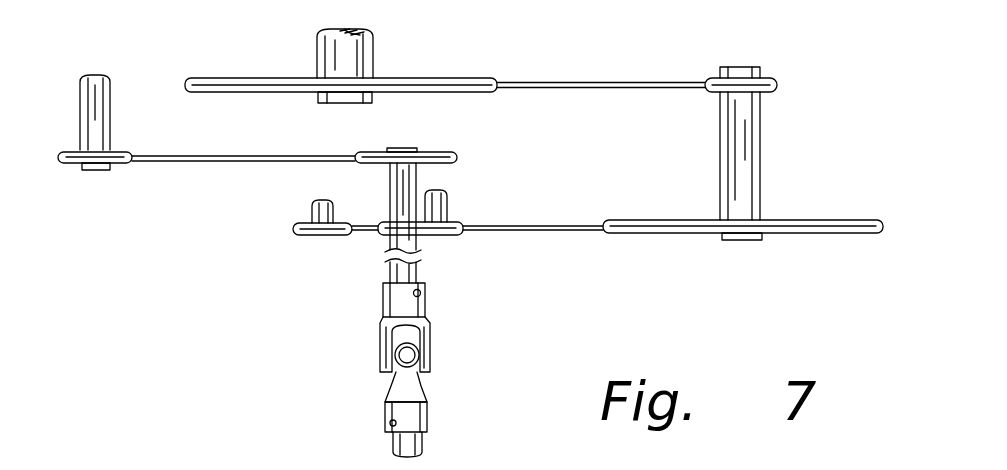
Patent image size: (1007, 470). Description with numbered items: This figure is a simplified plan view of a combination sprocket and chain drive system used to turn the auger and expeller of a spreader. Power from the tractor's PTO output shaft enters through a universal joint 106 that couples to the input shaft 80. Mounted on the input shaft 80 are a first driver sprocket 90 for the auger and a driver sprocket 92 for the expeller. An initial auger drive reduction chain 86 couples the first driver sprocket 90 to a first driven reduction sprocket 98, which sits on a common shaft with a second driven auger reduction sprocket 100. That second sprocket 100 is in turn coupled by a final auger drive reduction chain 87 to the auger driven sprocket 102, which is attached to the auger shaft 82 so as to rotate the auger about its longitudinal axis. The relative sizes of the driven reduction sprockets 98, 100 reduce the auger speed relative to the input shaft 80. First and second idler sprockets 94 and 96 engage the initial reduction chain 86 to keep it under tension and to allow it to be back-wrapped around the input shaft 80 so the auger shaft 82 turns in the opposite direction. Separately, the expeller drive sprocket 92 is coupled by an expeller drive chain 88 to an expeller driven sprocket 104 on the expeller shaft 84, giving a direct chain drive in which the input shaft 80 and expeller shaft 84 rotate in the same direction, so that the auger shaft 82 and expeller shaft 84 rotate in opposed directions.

The input shaft 80 is at (418, 178).
The auger shaft 82 is at (373, 52).
The expeller shaft 84 is at (108, 103).
The initial auger drive reduction chain 86 is at (572, 232).
The final auger drive reduction chain 87 is at (553, 82).
The expeller drive chain 88 is at (193, 162).
The first driver sprocket 90 is at (386, 222).
The driver sprocket of the expeller 92 is at (440, 150).
The first idler sprocket 94 is at (450, 237).
The second idler sprocket 96 is at (315, 237).
The first driven reduction sprocket 98 is at (692, 234).
The second driven auger reduction sprocket 100 is at (770, 78).
The auger driven sprocket 102 is at (220, 77).
The expeller driven sprocket 104 is at (75, 150).
The universal joint 106 is at (425, 328).